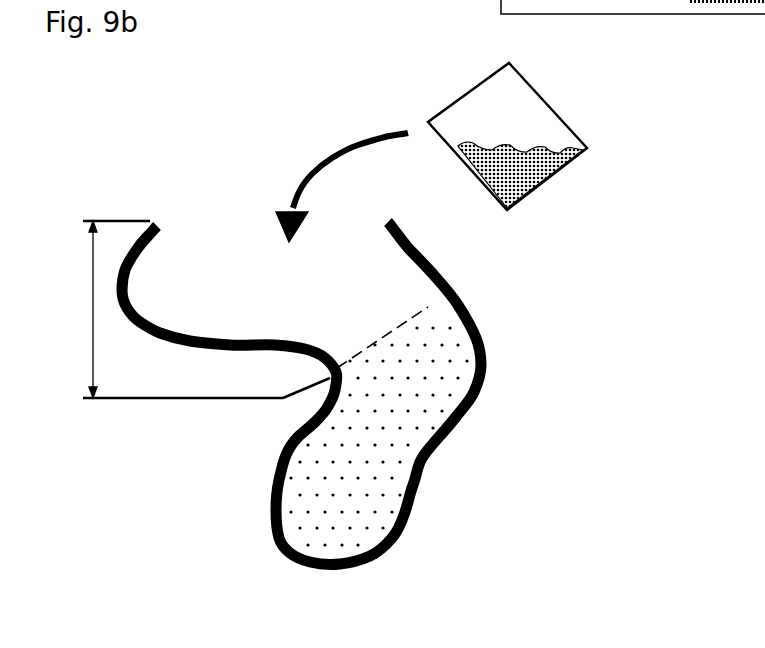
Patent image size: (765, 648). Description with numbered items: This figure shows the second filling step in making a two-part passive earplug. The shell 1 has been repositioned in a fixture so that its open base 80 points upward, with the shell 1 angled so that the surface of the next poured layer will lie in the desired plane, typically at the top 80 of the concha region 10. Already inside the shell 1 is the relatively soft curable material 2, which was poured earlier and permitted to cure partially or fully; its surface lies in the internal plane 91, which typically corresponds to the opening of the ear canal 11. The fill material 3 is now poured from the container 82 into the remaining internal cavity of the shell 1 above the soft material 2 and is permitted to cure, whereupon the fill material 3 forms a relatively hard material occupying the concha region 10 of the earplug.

The shell 1 is at (273, 520).
The soft curable material 2 is at (450, 397).
The fill material 3 is at (533, 190).
The concha region 10 is at (92, 311).
The opening of the ear canal 11 is at (330, 380).
The open base 80 is at (210, 240).
The container 82 is at (572, 122).
The internal plane 91 is at (390, 332).